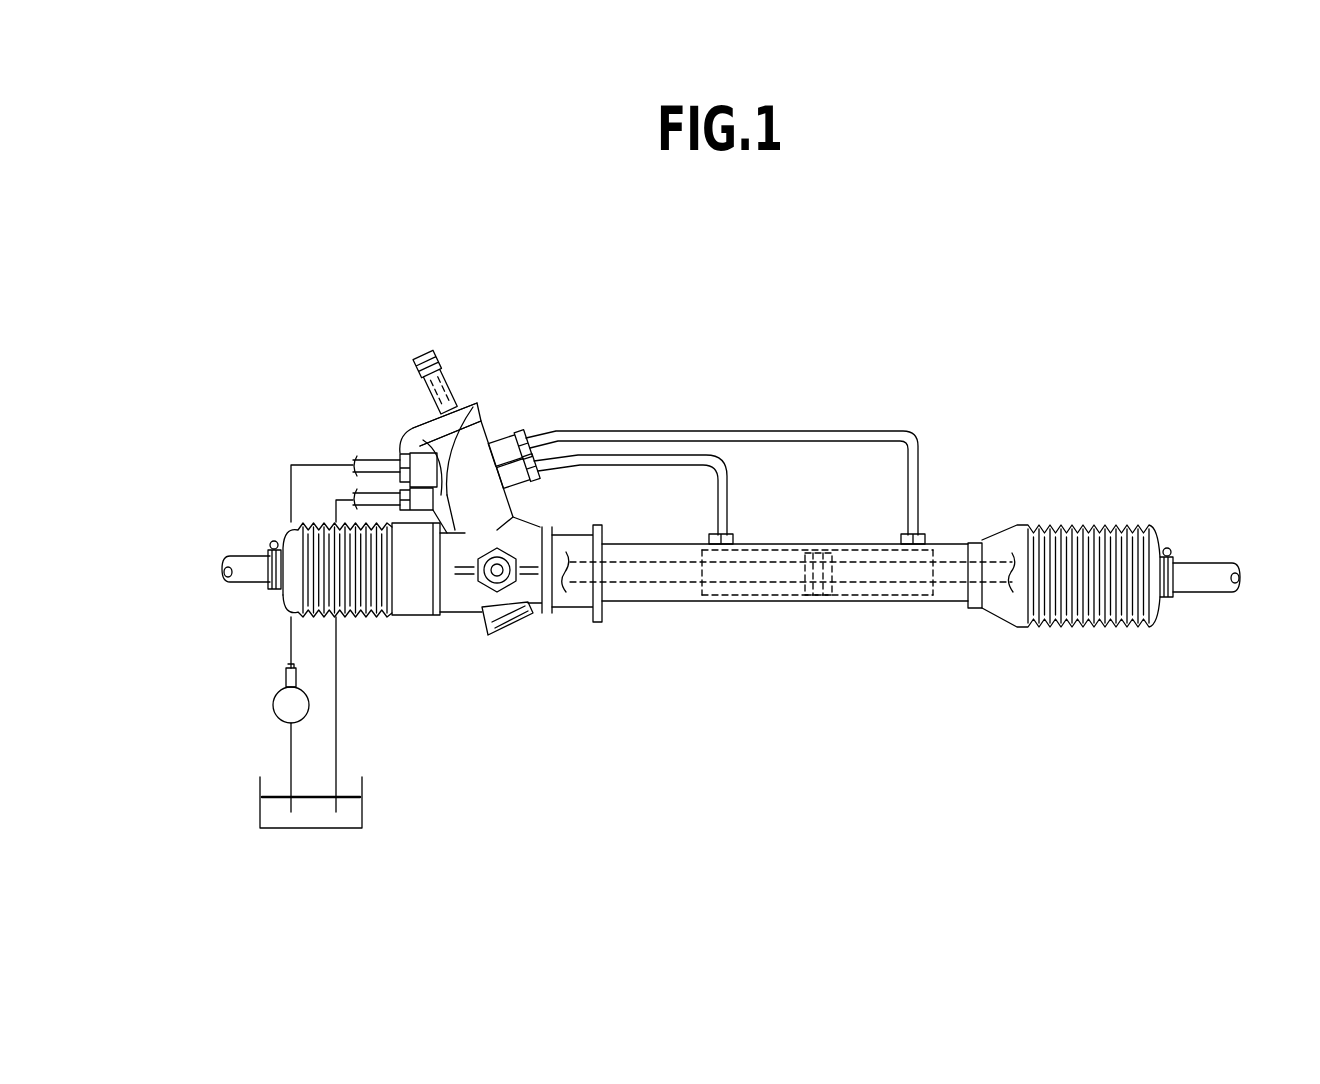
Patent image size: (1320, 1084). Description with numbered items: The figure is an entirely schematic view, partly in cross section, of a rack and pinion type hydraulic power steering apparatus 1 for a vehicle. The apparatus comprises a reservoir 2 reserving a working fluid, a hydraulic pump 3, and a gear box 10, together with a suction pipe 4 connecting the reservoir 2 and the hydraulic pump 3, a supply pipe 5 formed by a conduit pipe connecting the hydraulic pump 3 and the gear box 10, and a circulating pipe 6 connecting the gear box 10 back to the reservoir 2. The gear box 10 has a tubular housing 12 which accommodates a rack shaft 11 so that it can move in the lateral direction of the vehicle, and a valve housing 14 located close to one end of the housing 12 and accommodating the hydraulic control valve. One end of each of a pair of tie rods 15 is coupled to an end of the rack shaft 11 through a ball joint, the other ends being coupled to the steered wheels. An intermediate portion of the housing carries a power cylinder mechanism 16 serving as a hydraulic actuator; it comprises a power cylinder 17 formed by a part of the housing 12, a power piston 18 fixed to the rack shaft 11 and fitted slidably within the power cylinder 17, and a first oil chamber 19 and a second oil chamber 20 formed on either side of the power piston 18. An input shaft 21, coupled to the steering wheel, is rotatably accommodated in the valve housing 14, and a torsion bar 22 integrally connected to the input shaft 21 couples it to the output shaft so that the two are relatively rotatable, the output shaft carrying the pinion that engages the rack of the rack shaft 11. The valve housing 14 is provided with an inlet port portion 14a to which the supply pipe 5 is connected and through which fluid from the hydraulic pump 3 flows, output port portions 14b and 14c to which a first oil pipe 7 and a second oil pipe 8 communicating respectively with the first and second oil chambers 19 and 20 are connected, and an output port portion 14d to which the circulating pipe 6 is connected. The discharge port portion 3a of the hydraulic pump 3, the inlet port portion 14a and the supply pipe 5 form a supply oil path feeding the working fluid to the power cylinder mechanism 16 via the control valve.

The hydraulic power steering apparatus 1 is at (1000, 372).
The reservoir 2 is at (306, 830).
The hydraulic pump 3 is at (272, 705).
The discharge port portion 3a is at (285, 676).
The suction pipe 4 is at (288, 748).
The supply pipe 5 is at (291, 490).
The circulating pipe 6 is at (336, 682).
The first oil pipe 7 is at (658, 466).
The second oil pipe 8 is at (735, 431).
The gear box 10 is at (582, 655).
The rack shaft 11 is at (682, 594).
The housing 12 is at (653, 601).
The valve housing 14 is at (423, 440).
The inlet port portion 14a is at (415, 452).
The output port portion 14b is at (513, 480).
The output port portion 14c is at (508, 440).
The output port portion 14d is at (473, 407).
The tie rods 15 is at (248, 556).
The power cylinder mechanism 16 is at (803, 609).
The power cylinder 17 is at (863, 601).
The power piston 18 is at (820, 552).
The first oil chamber 19 is at (760, 596).
The second oil chamber 20 is at (915, 601).
The input shaft 21 is at (420, 387).
The torsion bar 22 is at (424, 350).